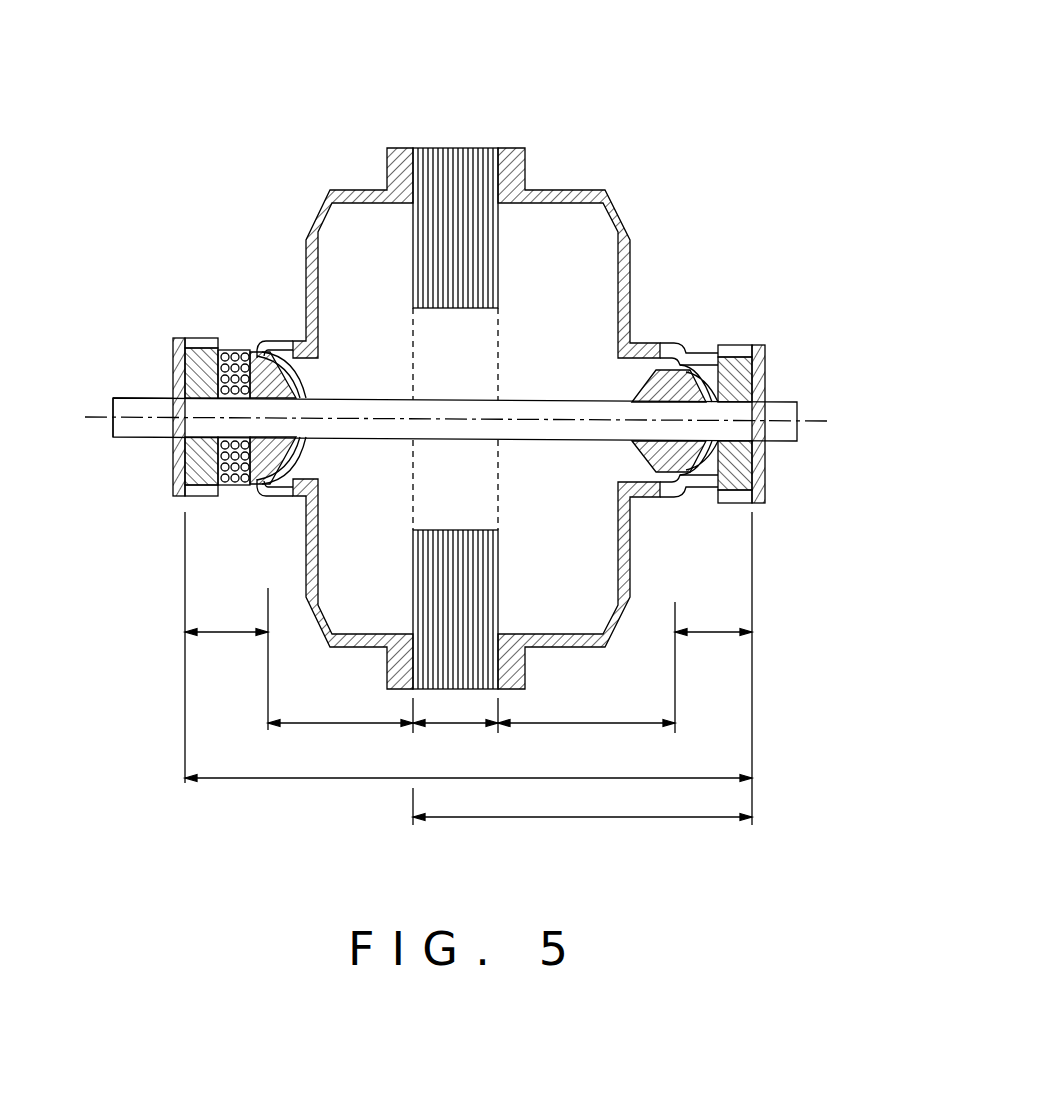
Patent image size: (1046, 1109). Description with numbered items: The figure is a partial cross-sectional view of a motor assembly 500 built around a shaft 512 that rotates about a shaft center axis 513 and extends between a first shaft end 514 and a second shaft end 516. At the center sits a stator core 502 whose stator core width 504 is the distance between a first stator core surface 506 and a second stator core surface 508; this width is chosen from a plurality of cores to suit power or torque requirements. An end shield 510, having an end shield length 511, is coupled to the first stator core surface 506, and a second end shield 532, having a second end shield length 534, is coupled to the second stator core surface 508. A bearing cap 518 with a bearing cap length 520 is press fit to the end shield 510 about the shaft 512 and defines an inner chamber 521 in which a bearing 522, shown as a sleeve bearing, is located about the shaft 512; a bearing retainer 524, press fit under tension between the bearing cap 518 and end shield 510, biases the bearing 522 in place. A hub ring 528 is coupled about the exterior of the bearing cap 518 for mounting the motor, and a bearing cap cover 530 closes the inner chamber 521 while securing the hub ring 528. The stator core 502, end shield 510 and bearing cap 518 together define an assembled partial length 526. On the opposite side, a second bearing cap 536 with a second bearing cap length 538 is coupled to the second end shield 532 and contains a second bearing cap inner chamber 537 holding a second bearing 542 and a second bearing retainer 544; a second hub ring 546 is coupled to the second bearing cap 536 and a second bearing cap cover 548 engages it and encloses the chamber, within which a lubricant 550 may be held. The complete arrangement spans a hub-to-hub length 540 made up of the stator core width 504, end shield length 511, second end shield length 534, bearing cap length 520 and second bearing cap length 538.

The motor assembly 500 is at (470, 30).
The stator core 502 is at (475, 155).
The stator core width 504 is at (452, 724).
The first stator core surface 506 is at (502, 208).
The second stator core surface 508 is at (412, 238).
The end shield 510 is at (622, 222).
The end shield length 511 is at (567, 727).
The shaft 512 is at (142, 397).
The shaft center axis 513 is at (97, 418).
The first shaft end 514 is at (800, 412).
The second shaft end 516 is at (113, 403).
The bearing cap 518 is at (690, 357).
The bearing cap length 520 is at (714, 635).
The inner chamber 521 is at (757, 473).
The bearing 522 is at (717, 490).
The bearing retainer 524 is at (685, 495).
The assembled partial length 526 is at (630, 818).
The hub ring 528 is at (737, 343).
The bearing cap cover 530 is at (765, 370).
The second end shield 532 is at (306, 242).
The second end shield length 534 is at (378, 725).
The second bearing cap 536 is at (238, 352).
The second bearing cap inner chamber 537 is at (198, 495).
The second bearing cap length 538 is at (235, 637).
The hub-to-hub length 540 is at (568, 780).
The second bearing 542 is at (242, 483).
The second bearing retainer 544 is at (253, 483).
The second hub ring 546 is at (205, 497).
The second bearing cap cover 548 is at (170, 455).
The lubricant 550 is at (213, 353).